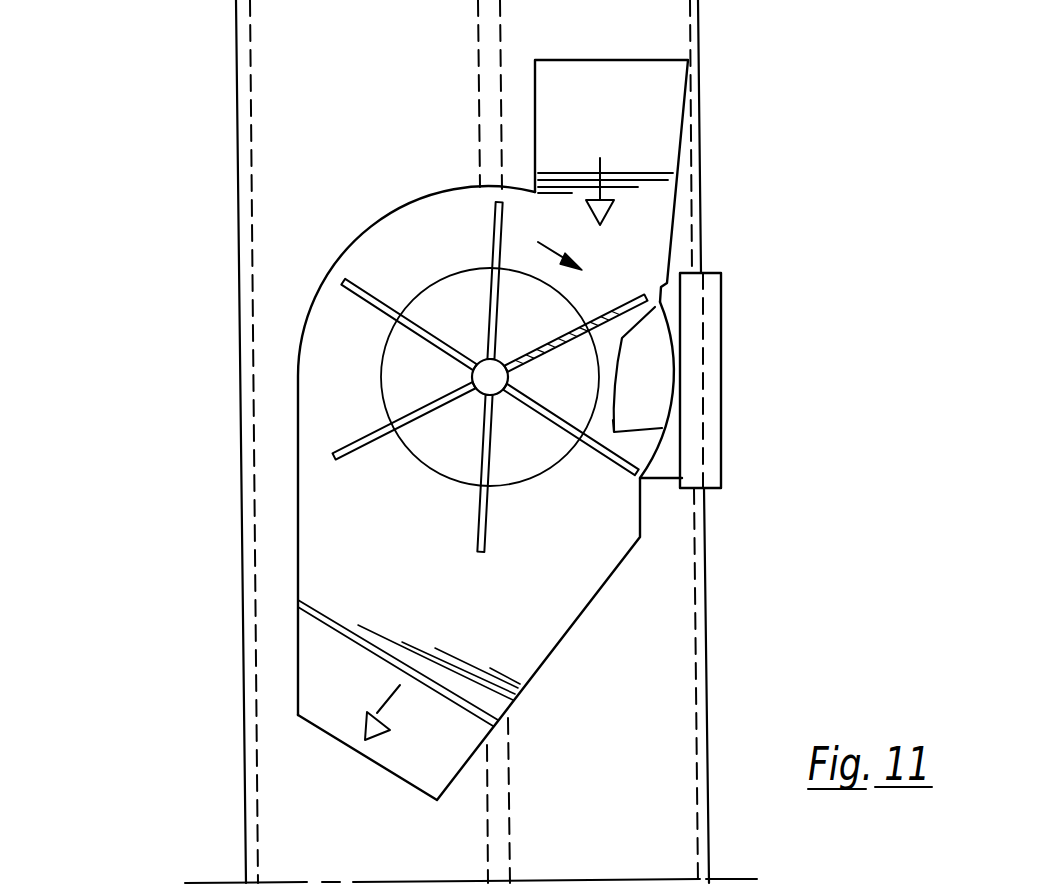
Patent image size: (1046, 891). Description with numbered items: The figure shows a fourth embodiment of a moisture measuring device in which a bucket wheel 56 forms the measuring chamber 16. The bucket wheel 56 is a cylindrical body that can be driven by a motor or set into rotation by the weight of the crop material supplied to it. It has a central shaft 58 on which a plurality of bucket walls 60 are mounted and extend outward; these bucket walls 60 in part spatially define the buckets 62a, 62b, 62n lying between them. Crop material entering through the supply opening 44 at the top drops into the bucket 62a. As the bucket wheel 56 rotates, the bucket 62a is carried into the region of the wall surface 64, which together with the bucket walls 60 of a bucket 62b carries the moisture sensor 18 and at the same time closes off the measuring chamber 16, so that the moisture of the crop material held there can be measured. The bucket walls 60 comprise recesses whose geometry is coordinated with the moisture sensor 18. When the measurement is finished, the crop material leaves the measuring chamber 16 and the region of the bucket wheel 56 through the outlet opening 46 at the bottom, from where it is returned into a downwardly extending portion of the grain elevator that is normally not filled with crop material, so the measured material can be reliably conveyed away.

The measuring chamber 16 is at (603, 420).
The moisture sensor 18 is at (653, 408).
The supply opening 44 is at (660, 118).
The outlet opening 46 is at (310, 702).
The bucket wheel 56 is at (172, 371).
The shaft 58 is at (472, 376).
The bucket walls 60 is at (481, 355).
The bucket 62a is at (570, 321).
The bucket 62b is at (604, 393).
The bucket 62n is at (462, 472).
The wall surface 64 is at (672, 357).